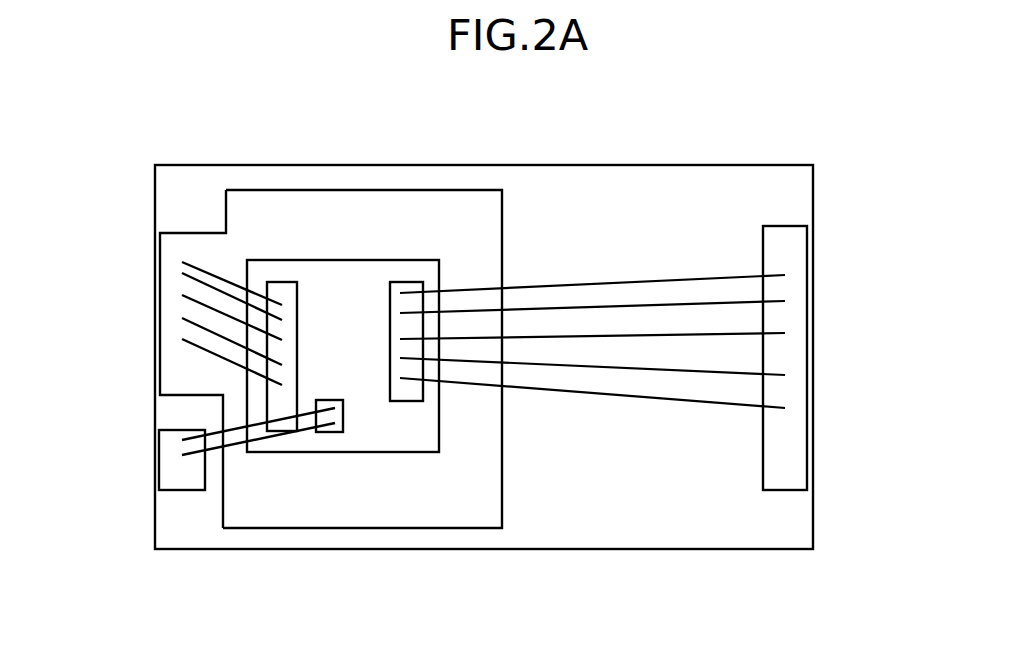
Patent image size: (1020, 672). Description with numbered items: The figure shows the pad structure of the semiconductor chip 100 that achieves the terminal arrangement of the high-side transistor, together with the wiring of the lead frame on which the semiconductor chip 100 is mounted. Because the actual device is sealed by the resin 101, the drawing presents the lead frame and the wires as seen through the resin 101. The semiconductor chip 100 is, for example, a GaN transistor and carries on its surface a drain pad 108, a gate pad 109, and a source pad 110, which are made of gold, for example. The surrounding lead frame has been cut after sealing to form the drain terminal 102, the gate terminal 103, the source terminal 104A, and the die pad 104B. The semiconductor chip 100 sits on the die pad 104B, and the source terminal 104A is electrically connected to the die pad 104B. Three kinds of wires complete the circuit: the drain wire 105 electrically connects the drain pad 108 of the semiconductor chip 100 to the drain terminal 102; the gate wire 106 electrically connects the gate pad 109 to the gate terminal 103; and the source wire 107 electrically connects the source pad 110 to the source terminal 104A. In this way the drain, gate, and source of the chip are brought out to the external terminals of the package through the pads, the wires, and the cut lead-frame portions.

The semiconductor chip 100 is at (383, 432).
The resin 101 is at (643, 505).
The drain terminal 102 is at (787, 455).
The gate terminal 103 is at (175, 467).
The source terminal 104A is at (177, 246).
The die pad 104B is at (288, 492).
The drain wire 105 is at (645, 278).
The gate wire 106 is at (237, 442).
The source wire 107 is at (207, 265).
The drain pad 108 is at (397, 290).
The gate pad 109 is at (334, 398).
The source pad 110 is at (282, 288).